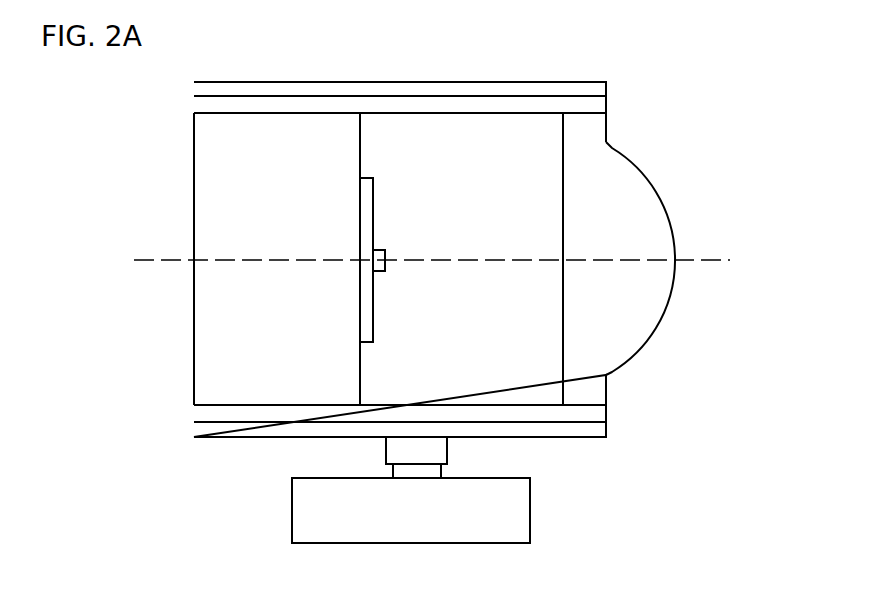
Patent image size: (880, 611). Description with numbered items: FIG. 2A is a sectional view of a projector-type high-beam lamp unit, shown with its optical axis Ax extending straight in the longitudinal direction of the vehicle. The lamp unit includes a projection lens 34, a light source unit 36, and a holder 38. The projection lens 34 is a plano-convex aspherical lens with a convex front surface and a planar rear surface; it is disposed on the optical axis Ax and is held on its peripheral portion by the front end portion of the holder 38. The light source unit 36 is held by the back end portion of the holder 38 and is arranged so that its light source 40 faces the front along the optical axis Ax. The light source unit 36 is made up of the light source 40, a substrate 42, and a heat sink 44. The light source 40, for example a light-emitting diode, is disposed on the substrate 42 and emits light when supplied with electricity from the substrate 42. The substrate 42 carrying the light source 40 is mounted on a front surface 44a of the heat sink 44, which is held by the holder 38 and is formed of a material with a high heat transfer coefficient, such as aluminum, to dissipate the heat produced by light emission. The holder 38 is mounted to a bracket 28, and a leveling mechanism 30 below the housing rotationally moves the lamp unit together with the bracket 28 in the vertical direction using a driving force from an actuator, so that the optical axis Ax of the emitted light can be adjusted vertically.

The bracket 28 is at (537, 88).
The leveling mechanism 30 is at (531, 507).
The projection lens 34 is at (632, 163).
The light source unit 36 is at (384, 140).
The holder 38 is at (473, 105).
The light source 40 is at (392, 250).
The substrate 42 is at (375, 197).
The heat sink 44 is at (265, 135).
The front surface of heat sink 44a is at (363, 380).
The optical axis Ax is at (710, 258).